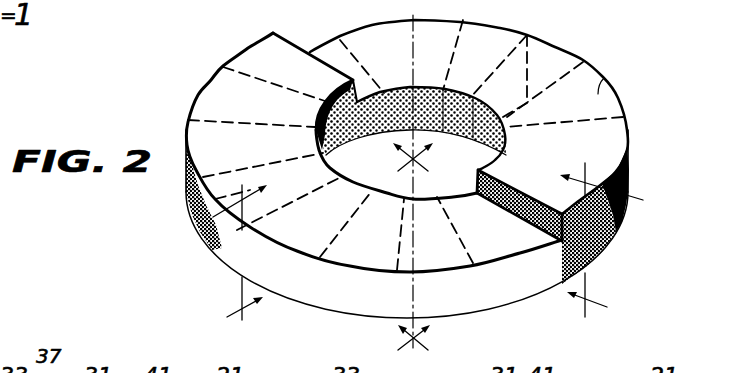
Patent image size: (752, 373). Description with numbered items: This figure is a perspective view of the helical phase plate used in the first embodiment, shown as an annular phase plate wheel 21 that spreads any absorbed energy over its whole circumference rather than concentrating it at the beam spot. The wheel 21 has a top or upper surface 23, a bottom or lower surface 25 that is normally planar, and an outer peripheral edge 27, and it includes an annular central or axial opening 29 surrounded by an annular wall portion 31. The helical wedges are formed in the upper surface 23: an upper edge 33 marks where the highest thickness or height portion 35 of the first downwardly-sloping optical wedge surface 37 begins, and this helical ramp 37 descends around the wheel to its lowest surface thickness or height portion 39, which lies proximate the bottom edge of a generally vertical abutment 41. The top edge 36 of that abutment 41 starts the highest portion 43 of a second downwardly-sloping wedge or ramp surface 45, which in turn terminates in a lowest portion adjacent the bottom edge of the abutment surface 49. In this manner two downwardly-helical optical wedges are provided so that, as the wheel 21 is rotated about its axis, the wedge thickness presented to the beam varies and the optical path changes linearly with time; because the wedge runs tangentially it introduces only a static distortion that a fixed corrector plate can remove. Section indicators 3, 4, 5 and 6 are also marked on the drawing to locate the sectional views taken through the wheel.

The phase plate wheel 21 is at (571, 27).
The upper surface 23 is at (475, 40).
The bottom surface 25 is at (317, 307).
The outer peripheral edge 27 is at (512, 296).
The central opening 29 is at (488, 167).
The annular wall portion 31 is at (338, 146).
The upper edge 33 is at (289, 46).
The highest thickness portion 35 is at (284, 68).
The top edge of abutment 36 is at (589, 233).
The optical wedge surface 37 is at (278, 182).
The lowest thickness portion 39 is at (492, 234).
The vertical abutment 41 is at (542, 220).
The highest portion of second ramp 43 is at (549, 188).
The second wedge surface 45 is at (604, 78).
The abutment surface 49 is at (357, 96).
The section line 3- 3 is at (233, 259).
The section line 4- 4 is at (607, 247).
The section line 5- 5 is at (402, 256).
The section line 6- 6 is at (421, 255).